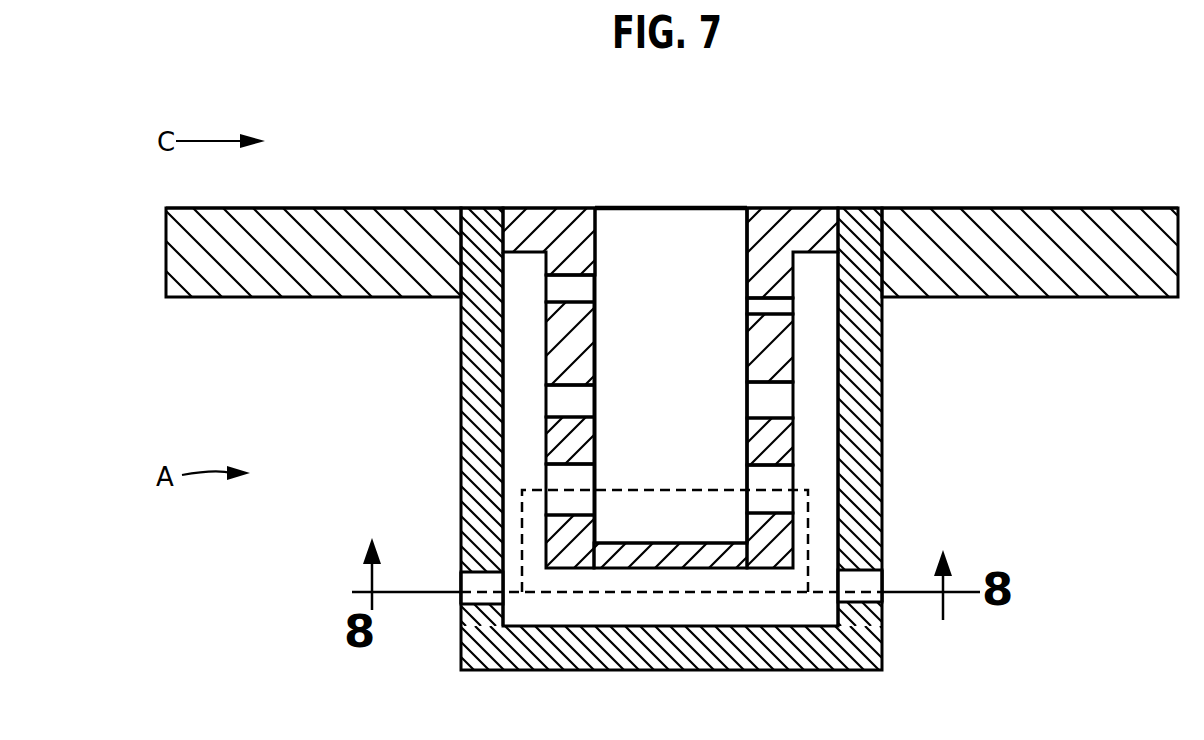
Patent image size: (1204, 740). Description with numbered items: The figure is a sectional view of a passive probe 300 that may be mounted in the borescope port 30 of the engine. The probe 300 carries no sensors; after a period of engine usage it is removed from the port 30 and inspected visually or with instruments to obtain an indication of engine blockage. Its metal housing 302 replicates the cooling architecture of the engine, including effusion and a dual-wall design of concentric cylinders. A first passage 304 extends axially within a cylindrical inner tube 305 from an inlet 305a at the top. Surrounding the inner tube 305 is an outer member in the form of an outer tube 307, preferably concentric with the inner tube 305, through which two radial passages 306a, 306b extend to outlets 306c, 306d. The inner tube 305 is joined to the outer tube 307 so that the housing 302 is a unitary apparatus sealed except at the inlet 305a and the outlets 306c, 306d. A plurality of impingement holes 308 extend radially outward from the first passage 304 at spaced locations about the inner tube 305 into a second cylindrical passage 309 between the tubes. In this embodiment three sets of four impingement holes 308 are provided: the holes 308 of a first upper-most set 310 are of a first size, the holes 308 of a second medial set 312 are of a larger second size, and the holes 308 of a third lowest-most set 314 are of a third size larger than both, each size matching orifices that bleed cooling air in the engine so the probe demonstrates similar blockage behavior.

The borescope port 30 is at (890, 196).
The probe 300 is at (872, 208).
The housing 302 is at (883, 372).
The first passage 304 is at (660, 257).
The inner tube 305 is at (738, 215).
The inlet 305a is at (700, 208).
The radial passage 306a is at (460, 588).
The radial passage 306b is at (867, 582).
The outlet 306c is at (463, 575).
The outlet 306d is at (882, 597).
The outer tube 307 is at (867, 642).
The impingement holes 308 is at (565, 288).
The second cylindrical passage 309 is at (535, 477).
The first upper-most set 310 is at (597, 293).
The second medial set 312 is at (595, 402).
The third lowest-most set 314 is at (595, 475).